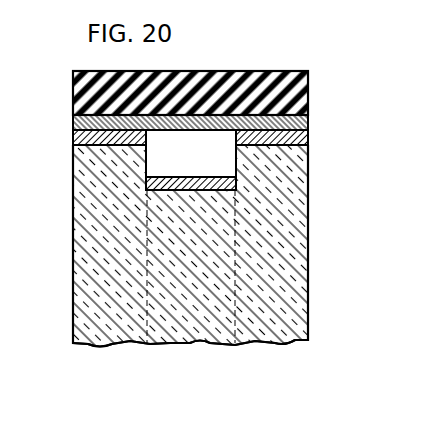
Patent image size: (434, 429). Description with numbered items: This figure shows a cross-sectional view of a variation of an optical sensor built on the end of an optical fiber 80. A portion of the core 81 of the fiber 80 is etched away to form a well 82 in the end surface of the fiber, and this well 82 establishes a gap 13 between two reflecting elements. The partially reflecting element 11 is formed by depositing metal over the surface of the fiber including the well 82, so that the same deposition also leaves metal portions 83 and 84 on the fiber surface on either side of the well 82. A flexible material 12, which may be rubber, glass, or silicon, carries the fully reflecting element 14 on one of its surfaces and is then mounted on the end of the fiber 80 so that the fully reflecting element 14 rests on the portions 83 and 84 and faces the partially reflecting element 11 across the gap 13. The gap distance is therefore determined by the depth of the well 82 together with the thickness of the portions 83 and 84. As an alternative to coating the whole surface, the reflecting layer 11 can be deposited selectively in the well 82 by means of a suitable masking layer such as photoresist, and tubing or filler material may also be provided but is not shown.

The flexible material 12 is at (308, 98).
The fully reflecting element 14 is at (308, 120).
The portion on the fiber surface 84 is at (308, 137).
The portion on the fiber surface 83 is at (73, 137).
The well 82 is at (146, 157).
The gap 13 is at (236, 162).
The partially reflecting element 11 is at (236, 187).
The fiber 80 is at (293, 265).
The core 81 is at (190, 343).